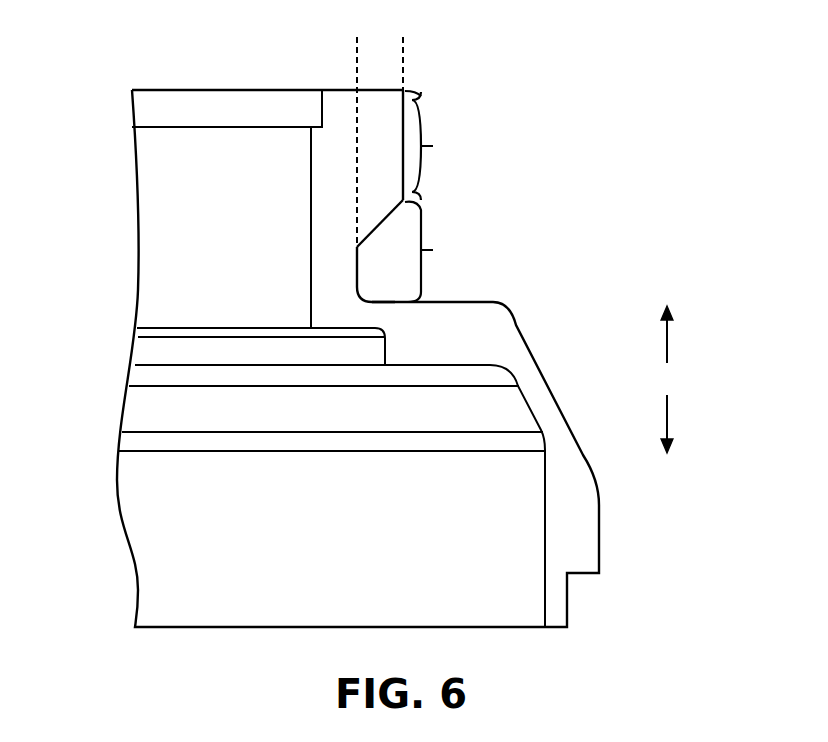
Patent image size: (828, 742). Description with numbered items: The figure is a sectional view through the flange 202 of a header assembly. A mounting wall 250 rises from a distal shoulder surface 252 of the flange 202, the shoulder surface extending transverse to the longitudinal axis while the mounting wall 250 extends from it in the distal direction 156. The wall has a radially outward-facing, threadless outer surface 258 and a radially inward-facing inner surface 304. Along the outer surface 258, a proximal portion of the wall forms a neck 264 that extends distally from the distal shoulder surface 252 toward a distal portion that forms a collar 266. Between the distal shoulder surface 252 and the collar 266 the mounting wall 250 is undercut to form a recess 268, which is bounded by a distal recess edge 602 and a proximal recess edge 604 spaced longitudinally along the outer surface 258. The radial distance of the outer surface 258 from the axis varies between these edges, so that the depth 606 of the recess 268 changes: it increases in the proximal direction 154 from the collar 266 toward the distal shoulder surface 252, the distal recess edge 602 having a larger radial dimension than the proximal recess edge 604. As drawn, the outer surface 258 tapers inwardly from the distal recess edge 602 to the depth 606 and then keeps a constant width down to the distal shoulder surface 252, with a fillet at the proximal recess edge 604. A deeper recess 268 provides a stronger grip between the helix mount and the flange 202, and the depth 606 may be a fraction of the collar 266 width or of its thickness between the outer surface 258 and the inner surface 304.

The proximal direction 154 is at (667, 413).
The distal direction 156 is at (667, 342).
The flange 202 is at (575, 508).
The mounting wall 250 is at (330, 207).
The distal shoulder surface 252 is at (470, 300).
The outer surface 258 is at (405, 120).
The neck 264 is at (438, 252).
The collar 266 is at (438, 145).
The recess 268 is at (484, 240).
The inner surface 304 is at (311, 165).
The distal recess edge 602 is at (403, 208).
The proximal recess edge 604 is at (362, 293).
The depth 606 is at (303, 55).